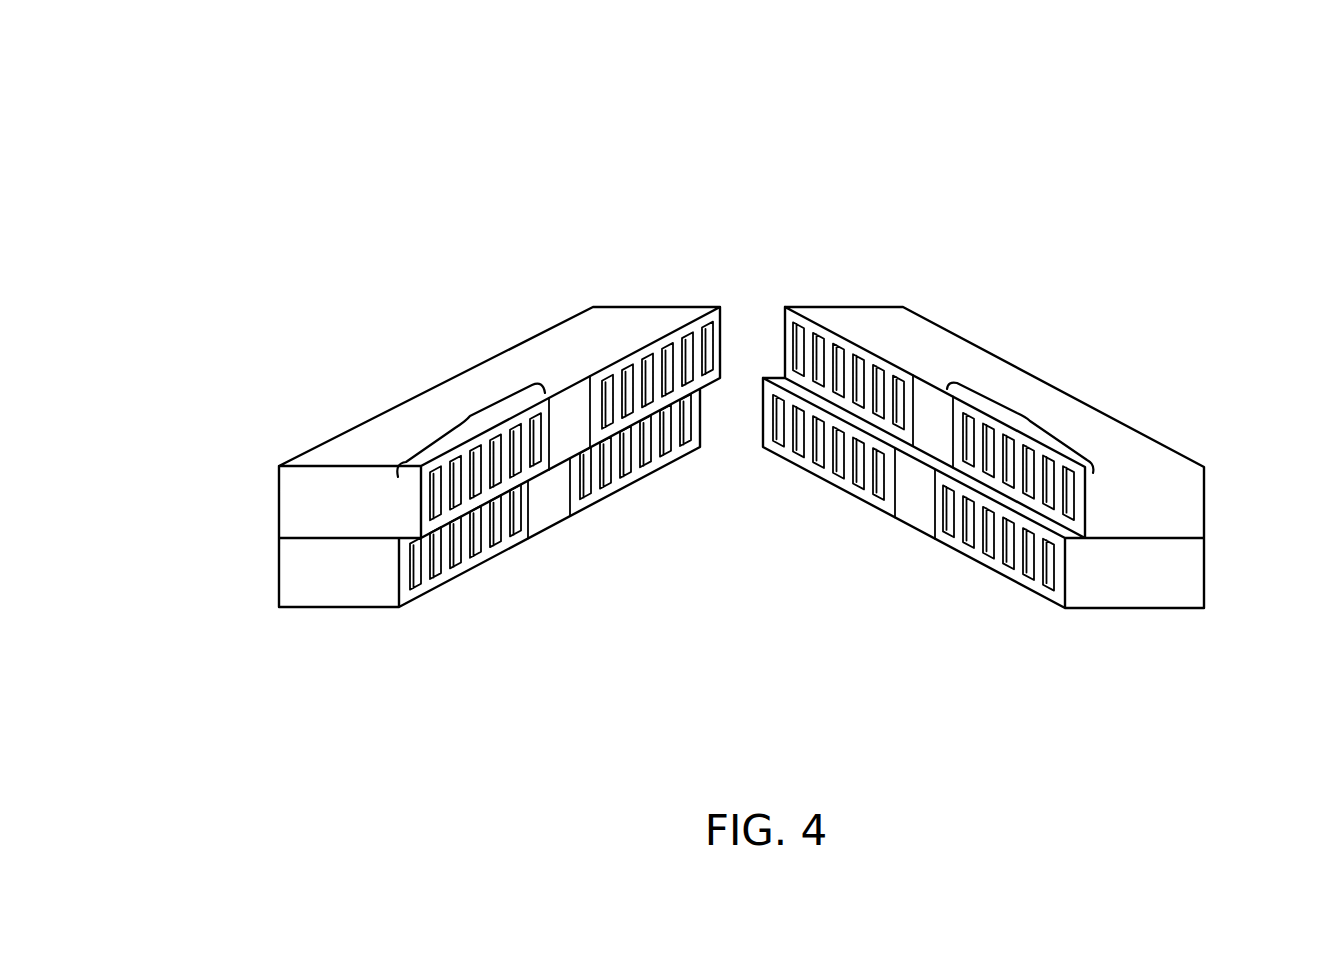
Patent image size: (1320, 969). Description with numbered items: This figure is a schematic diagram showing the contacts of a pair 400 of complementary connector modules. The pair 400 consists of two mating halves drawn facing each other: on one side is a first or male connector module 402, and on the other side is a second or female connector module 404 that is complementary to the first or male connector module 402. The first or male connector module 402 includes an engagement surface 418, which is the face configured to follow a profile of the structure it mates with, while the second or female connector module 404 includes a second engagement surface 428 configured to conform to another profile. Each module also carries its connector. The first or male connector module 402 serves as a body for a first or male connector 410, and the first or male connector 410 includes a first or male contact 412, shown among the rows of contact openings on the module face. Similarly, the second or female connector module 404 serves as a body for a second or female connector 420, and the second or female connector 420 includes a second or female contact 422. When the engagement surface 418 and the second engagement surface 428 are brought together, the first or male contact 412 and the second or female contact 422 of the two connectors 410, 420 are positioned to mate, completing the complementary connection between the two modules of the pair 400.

The pair of complementary connector modules 400 is at (660, 197).
The first or male connector module 402 is at (572, 335).
The second or female connector module 404 is at (950, 352).
The first or male connector 410 is at (463, 416).
The second or female connector 420 is at (1027, 412).
The first or male contact 412 is at (437, 509).
The second or female contact 422 is at (1061, 512).
The engagement surface 418 is at (420, 503).
The second engagement surface 428 is at (1087, 513).